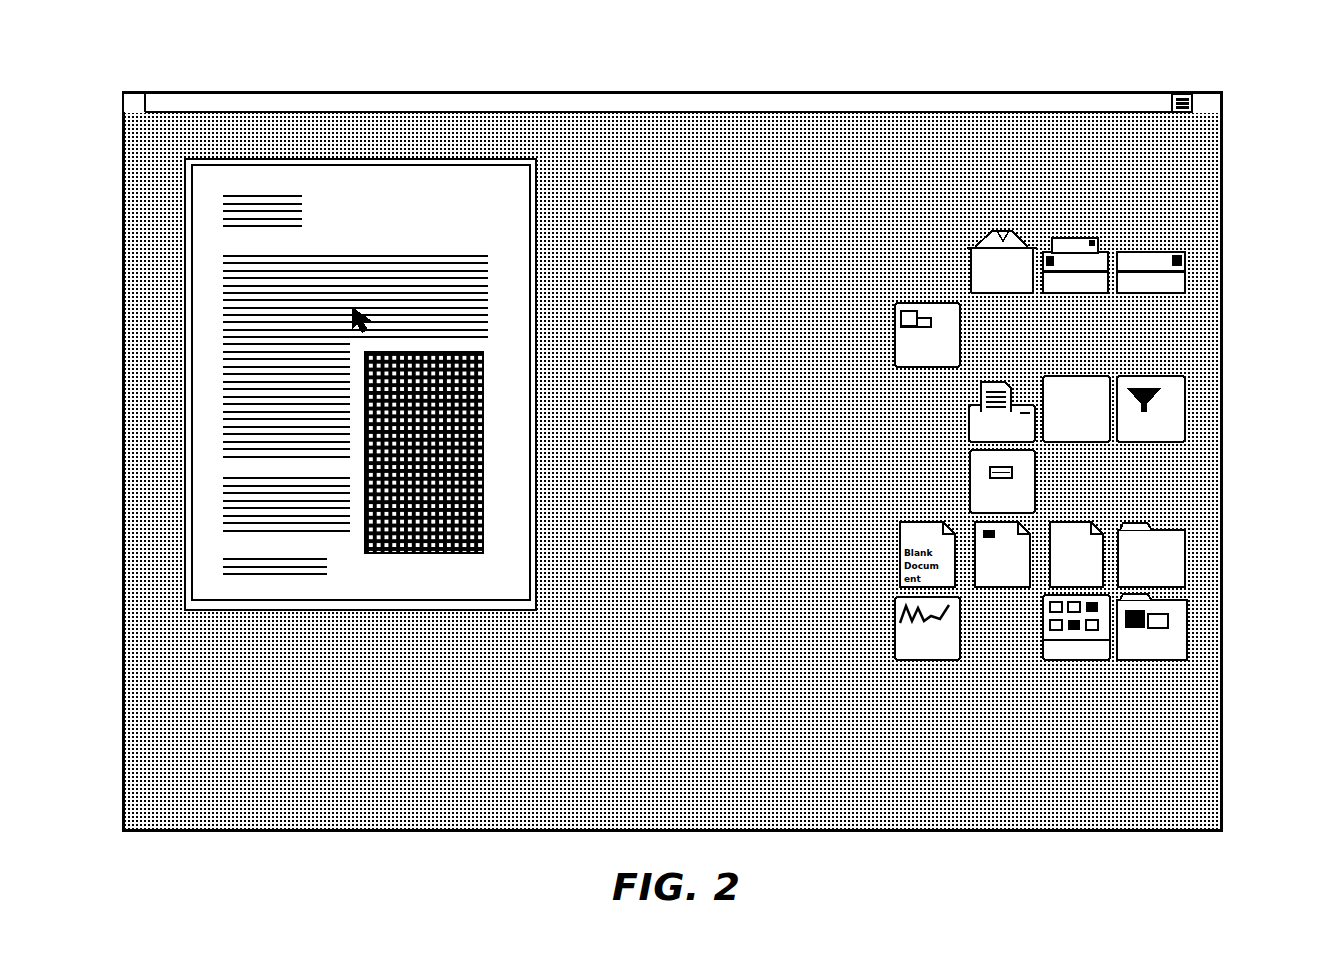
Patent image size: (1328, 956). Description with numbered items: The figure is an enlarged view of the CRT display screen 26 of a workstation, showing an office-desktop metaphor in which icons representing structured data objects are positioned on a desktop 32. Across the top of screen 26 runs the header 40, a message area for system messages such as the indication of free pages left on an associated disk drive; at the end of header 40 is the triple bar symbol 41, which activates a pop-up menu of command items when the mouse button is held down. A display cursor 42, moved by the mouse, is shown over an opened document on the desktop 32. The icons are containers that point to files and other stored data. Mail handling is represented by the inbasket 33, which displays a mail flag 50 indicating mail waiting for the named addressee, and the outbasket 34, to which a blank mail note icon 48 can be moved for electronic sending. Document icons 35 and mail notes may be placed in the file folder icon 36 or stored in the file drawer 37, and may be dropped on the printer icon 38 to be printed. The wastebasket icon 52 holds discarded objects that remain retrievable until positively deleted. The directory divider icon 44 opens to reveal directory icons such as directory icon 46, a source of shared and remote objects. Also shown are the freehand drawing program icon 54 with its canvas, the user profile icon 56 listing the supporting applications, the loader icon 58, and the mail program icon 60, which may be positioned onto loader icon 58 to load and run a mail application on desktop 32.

The CRT display screen 26 is at (137, 84).
The header 40 is at (568, 101).
The triple bar symbol 41 is at (1181, 94).
The desktop 32 is at (188, 275).
The display cursor 42 is at (364, 313).
The wastebasket icon 52 is at (1010, 233).
The mail flag 50 is at (1068, 236).
The inbasket 33 is at (1114, 248).
The outbasket 34 is at (1187, 258).
The user profile icon 56 is at (895, 323).
The printer icon 38 is at (968, 413).
The mail program icon 60 is at (1070, 377).
The loader icon 58 is at (1165, 377).
The file drawer 37 is at (968, 473).
The blank mail note icon 48 is at (975, 530).
The document icon 35 is at (1047, 579).
The file folder icon 36 is at (1187, 576).
The freehand drawing program icon 54 is at (895, 612).
The directory icon 46 is at (1052, 662).
The directory divider icon 44 is at (1188, 656).